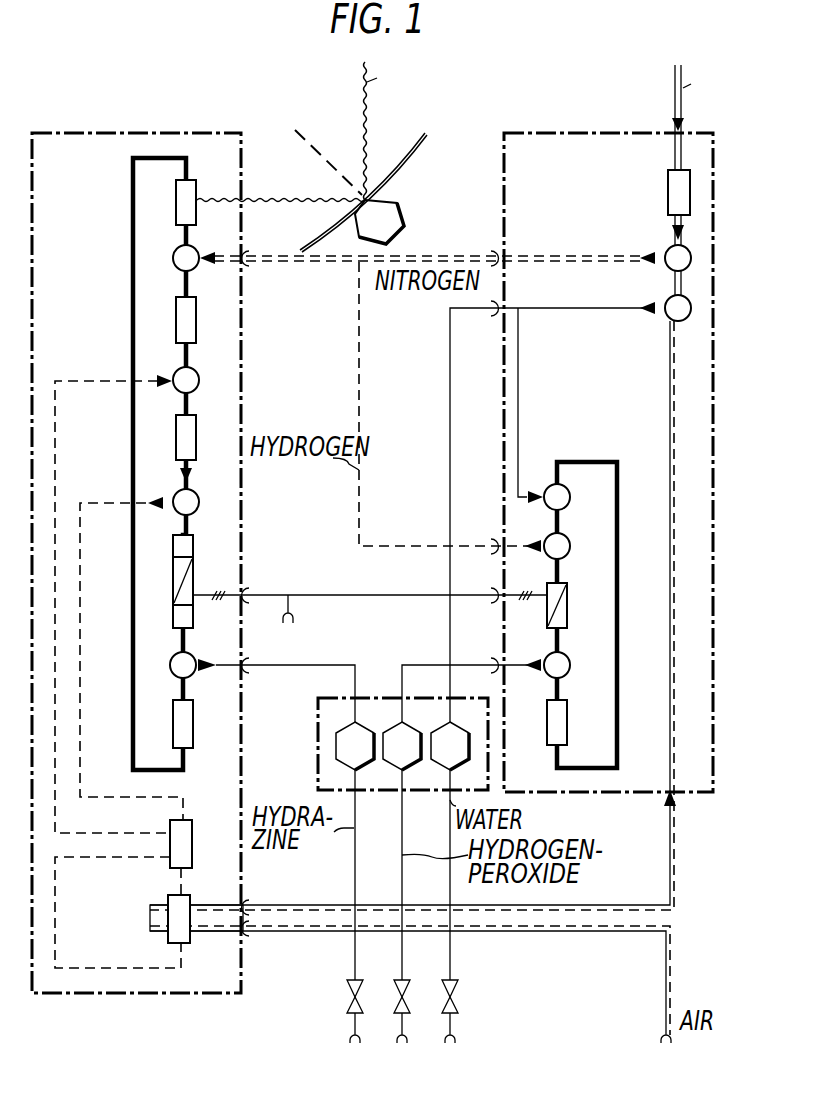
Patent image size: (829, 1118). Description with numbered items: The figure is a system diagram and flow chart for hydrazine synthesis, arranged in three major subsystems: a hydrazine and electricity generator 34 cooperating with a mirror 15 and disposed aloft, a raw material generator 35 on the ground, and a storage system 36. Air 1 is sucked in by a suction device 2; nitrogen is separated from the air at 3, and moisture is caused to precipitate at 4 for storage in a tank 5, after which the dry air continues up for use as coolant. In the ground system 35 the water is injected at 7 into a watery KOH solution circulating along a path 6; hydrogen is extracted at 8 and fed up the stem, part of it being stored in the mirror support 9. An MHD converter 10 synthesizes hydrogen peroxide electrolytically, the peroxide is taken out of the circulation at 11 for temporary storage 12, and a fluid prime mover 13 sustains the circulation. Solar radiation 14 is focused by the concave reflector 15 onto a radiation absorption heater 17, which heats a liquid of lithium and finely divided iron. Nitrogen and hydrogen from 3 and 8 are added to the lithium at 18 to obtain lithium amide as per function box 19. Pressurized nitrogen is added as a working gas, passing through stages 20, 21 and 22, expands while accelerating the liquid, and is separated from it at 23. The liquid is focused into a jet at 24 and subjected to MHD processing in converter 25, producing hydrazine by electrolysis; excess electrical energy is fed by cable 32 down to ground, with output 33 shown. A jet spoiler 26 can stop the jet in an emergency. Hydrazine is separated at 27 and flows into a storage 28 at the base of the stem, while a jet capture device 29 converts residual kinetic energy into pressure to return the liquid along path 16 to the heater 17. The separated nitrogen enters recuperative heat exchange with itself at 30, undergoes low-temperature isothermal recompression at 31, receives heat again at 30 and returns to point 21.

The air 1 is at (675, 102).
The suction device 2 is at (667, 196).
The nitrogen separation 3 is at (668, 248).
The moisture precipitation 4 is at (670, 298).
The tank 5 is at (450, 882).
The circulation path 6 is at (585, 462).
The water injection point 7 is at (570, 497).
The hydrogen extraction point 8 is at (570, 546).
The mirror support 9 is at (398, 213).
The MHD converter 10 is at (567, 605).
The peroxide take-out point 11 is at (570, 665).
The storage 12 is at (402, 882).
The fluid prime mover 13 is at (567, 723).
The solar radiation 14 is at (361, 108).
The mirror 15 is at (425, 140).
The return path 16 is at (133, 201).
The radiation absorption heater 17 is at (197, 191).
The nitrogen and hydrogen addition point 18 is at (197, 250).
The lithium amide formation 19 is at (196, 320).
The line 20 is at (83, 369).
The nitrogen return point 21 is at (205, 369).
The reactor 22 is at (196, 440).
The gas separation point 23 is at (205, 492).
The jet focusing 24 is at (193, 541).
The MHD converter 25 is at (193, 580).
The jet spoiler 26 is at (193, 620).
The hydrazine separation point 27 is at (202, 651).
The storage 28 is at (355, 882).
The jet capture device 29 is at (193, 728).
The recuperative heat exchanger 30 is at (202, 839).
The isothermal recompression 31 is at (190, 898).
The cable 32 is at (385, 597).
The electrical output 33 is at (284, 625).
The hydrazine and electricity generator 34 is at (158, 994).
The raw material generator 35 is at (552, 793).
The storage system 36 is at (318, 766).